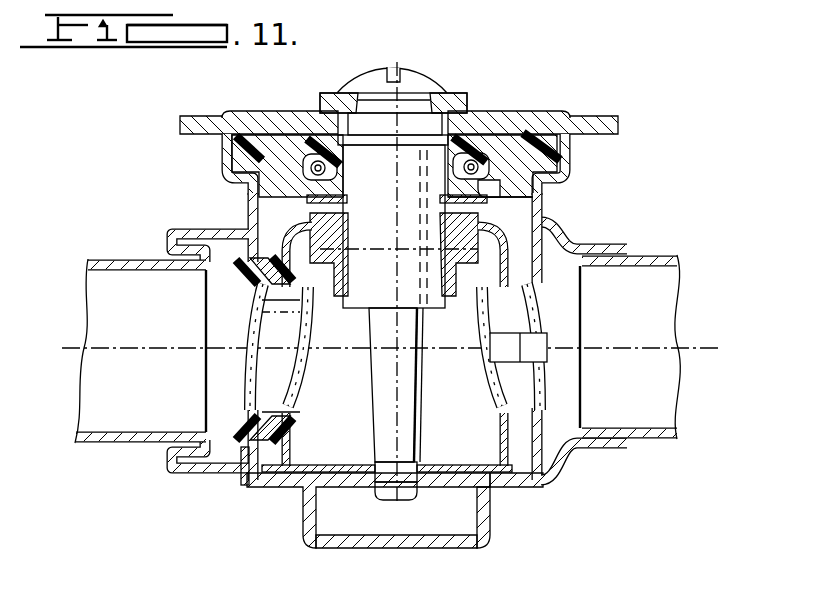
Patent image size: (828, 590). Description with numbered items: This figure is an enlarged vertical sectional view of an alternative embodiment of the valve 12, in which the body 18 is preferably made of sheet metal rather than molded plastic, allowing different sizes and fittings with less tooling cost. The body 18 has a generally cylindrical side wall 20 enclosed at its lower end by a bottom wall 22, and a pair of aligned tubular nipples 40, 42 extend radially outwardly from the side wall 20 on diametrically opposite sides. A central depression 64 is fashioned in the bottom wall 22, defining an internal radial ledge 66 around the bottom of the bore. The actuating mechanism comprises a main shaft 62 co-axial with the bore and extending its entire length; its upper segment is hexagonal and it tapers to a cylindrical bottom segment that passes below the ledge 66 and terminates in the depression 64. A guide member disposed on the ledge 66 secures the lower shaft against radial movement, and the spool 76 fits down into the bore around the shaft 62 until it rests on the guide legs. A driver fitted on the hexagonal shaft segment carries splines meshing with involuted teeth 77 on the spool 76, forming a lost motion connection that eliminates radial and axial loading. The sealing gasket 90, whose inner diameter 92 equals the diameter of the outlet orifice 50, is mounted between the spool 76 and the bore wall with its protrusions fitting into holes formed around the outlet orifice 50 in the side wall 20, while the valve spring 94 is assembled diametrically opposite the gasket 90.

The valve 12 is at (58, 324).
The valve body 18 is at (243, 189).
The side wall 20 is at (530, 228).
The bottom wall 22 is at (452, 545).
The nipple 40 is at (664, 256).
The nipple 42 is at (97, 262).
The outlet orifice 50 is at (276, 352).
The main shaft 62 is at (422, 413).
The central depression 64 is at (400, 533).
The internal radial ledge 66 is at (519, 476).
The spool 76 is at (488, 474).
The retainer plate 77 is at (312, 226).
The sealing gasket 90 is at (277, 447).
The inner diameter 92 is at (284, 315).
The valve spring 94 is at (504, 326).